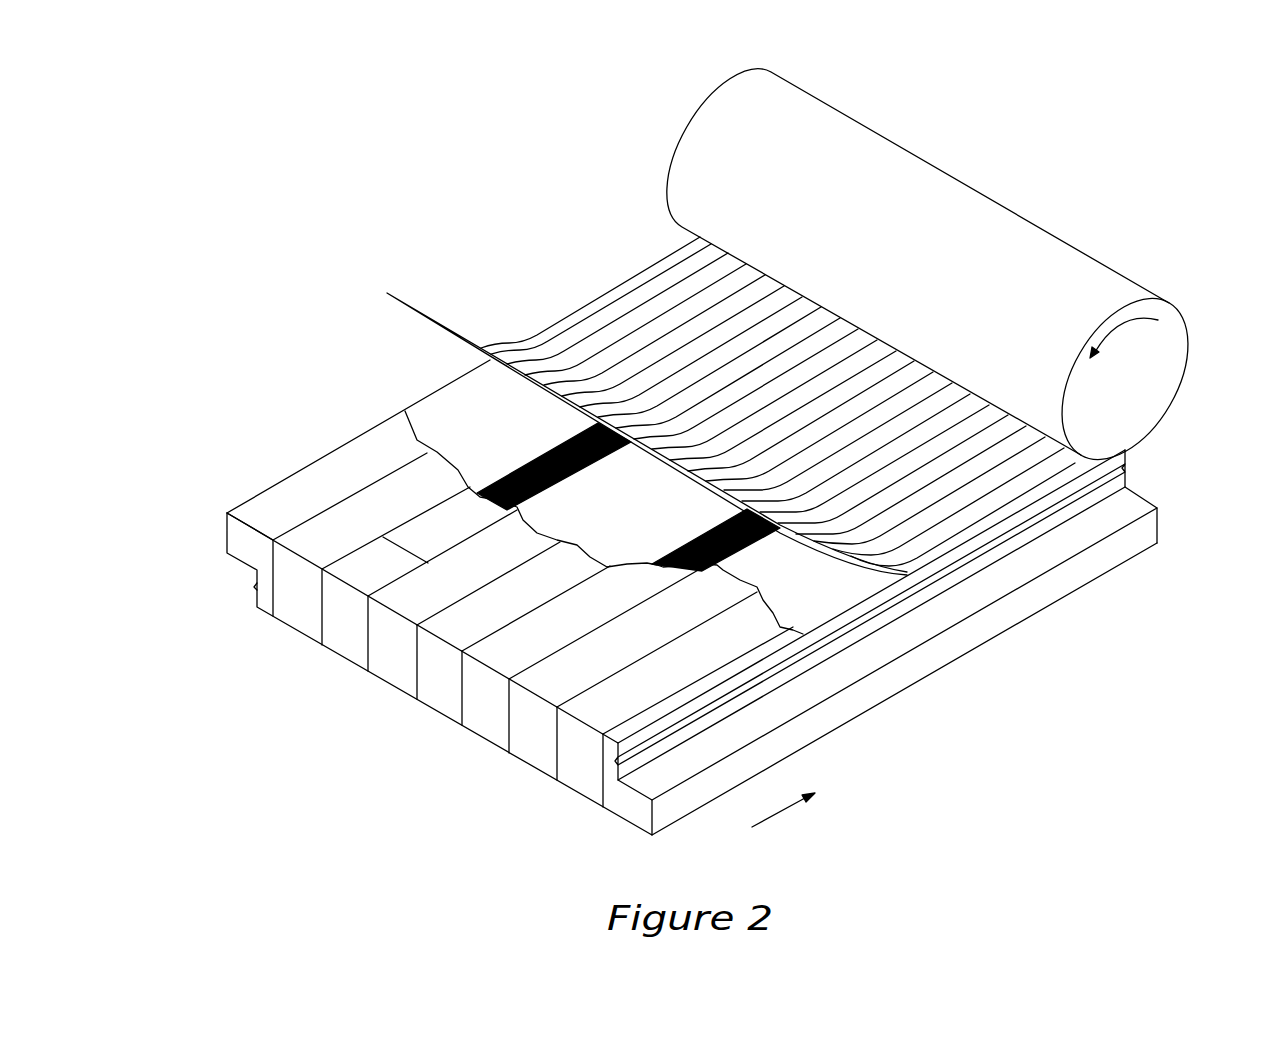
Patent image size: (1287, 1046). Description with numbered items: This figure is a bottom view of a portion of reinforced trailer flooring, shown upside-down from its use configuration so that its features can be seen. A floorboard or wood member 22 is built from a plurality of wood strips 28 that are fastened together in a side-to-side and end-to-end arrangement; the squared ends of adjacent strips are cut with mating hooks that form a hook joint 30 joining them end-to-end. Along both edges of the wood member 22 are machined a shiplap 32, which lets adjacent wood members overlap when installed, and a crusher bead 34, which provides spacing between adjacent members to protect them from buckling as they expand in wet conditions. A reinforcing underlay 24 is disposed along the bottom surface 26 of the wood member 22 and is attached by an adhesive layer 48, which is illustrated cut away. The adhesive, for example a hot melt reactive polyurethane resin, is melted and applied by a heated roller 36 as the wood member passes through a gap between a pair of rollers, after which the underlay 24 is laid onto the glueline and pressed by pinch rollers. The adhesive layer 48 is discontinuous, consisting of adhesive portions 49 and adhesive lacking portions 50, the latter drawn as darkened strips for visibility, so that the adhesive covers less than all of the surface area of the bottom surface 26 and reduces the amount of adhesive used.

The wood member 22 is at (275, 460).
The underlay 24 is at (410, 330).
The bottom surface 26 is at (414, 505).
The wood strip 28 is at (533, 752).
The hook joint 30 is at (405, 548).
The shiplap 32 is at (226, 533).
The crusher bead 34 is at (256, 587).
The roller 36 is at (1162, 375).
The adhesive layer 48 is at (400, 428).
The adhesive portion 49 is at (460, 403).
The adhesive lacking portion 50 is at (567, 443).